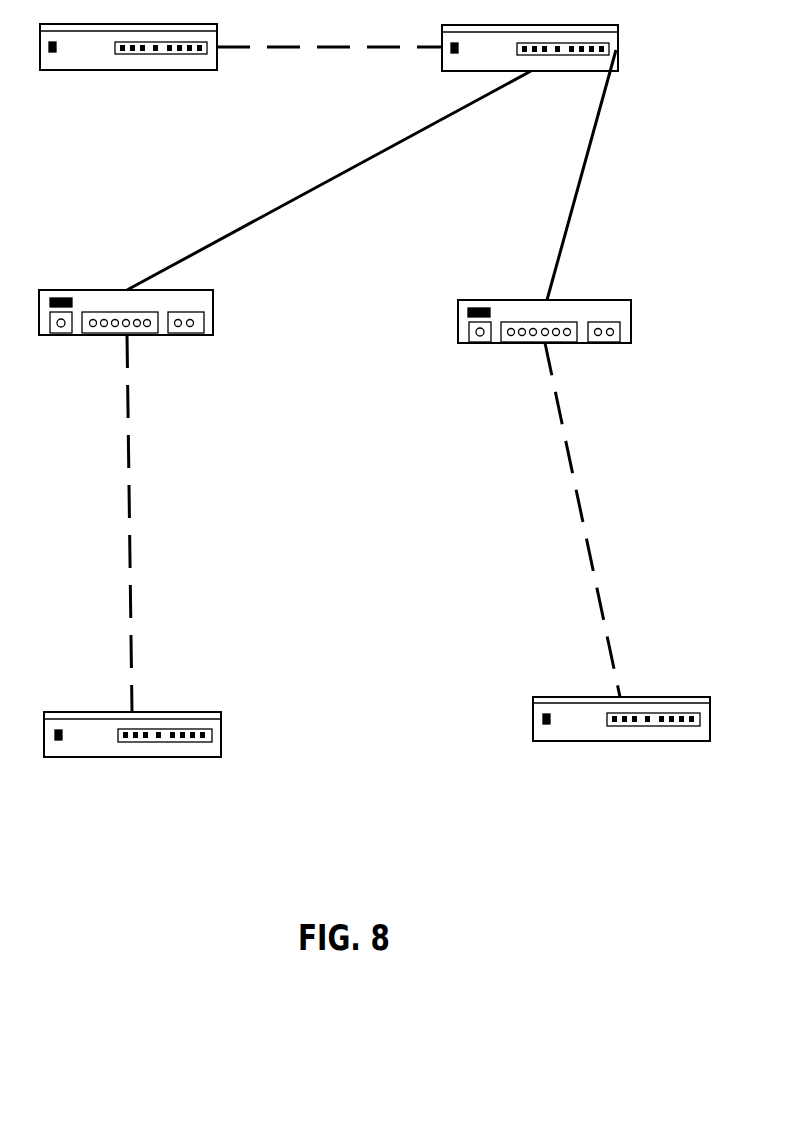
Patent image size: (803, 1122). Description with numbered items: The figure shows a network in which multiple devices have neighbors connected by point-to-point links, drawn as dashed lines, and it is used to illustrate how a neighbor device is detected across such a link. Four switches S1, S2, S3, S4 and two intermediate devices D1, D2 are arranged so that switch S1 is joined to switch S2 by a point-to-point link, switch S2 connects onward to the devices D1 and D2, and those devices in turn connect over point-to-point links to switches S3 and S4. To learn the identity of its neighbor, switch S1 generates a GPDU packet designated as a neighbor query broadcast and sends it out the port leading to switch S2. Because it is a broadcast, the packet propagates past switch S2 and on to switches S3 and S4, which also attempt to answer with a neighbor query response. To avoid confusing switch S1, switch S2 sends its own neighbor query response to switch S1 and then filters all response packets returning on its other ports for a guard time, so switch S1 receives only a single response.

The switch S1 is at (128, 63).
The switch S2 is at (530, 64).
The switch S3 is at (132, 752).
The switch S4 is at (621, 736).
The device D1 is at (126, 329).
The device D2 is at (544, 339).